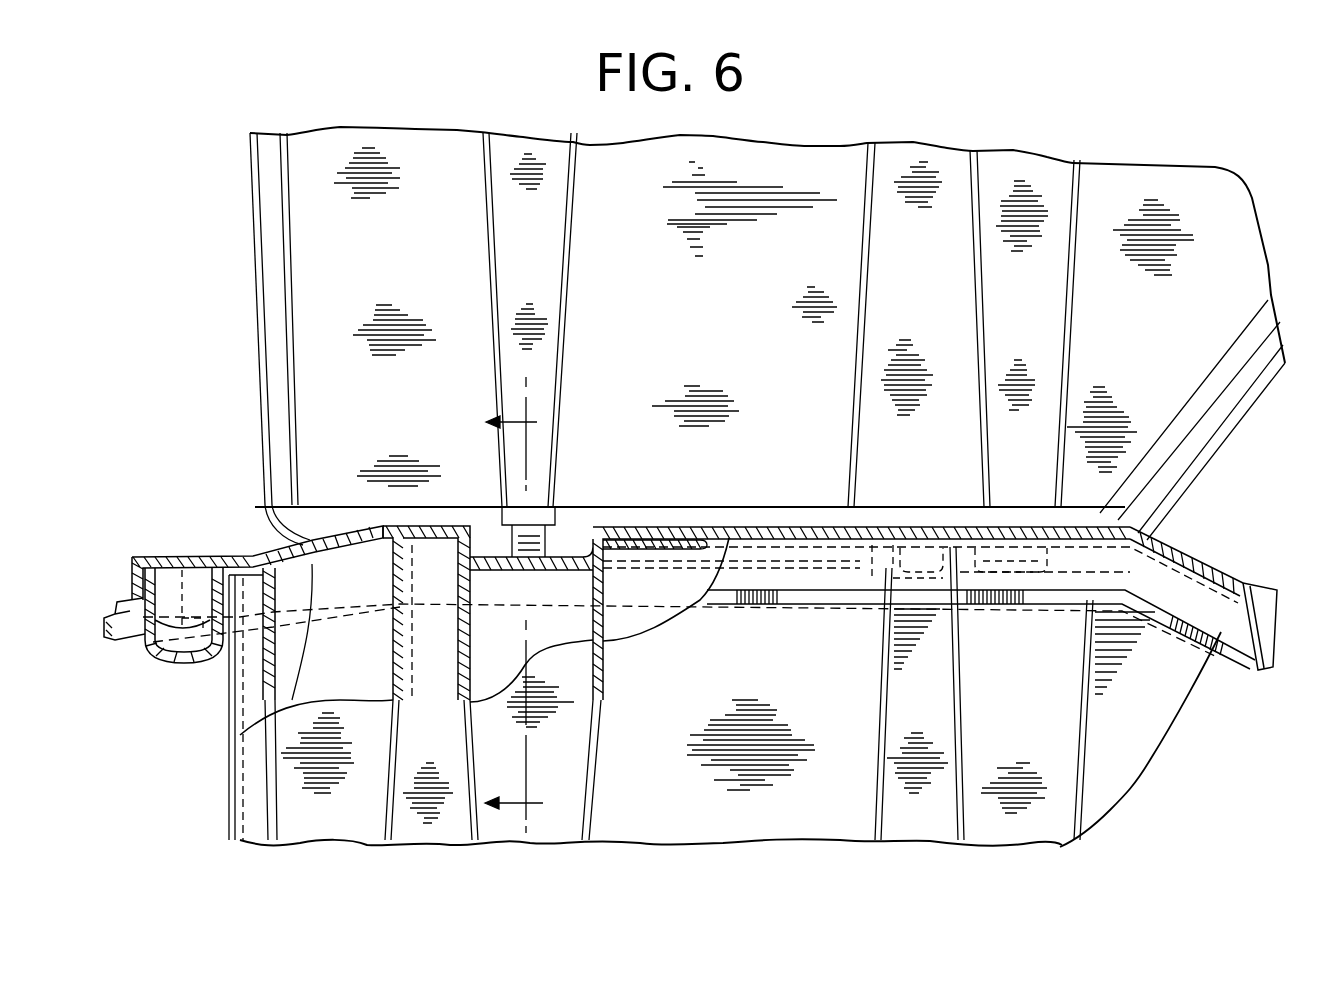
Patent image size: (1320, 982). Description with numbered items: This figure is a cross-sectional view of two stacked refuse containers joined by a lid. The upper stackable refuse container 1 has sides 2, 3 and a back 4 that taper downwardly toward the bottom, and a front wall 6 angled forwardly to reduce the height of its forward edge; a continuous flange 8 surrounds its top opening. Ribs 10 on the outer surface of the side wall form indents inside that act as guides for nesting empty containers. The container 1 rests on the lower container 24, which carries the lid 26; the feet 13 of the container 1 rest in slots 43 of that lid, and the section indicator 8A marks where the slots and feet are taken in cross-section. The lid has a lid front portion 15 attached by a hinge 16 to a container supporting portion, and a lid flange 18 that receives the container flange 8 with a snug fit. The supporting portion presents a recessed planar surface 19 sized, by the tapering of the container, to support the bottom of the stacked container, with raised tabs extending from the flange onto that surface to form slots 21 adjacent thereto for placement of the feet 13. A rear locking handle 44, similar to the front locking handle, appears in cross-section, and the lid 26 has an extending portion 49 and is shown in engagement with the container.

The stackable refuse container 1 is at (226, 240).
The side 2 is at (614, 634).
The side 3 is at (748, 332).
The back 4 is at (278, 334).
The front wall 6 is at (1227, 413).
The continuous flange 8 is at (1208, 600).
The section line 8A is at (533, 605).
The ribs 10 is at (548, 272).
The feet 13 is at (514, 562).
The lid front portion 15 is at (1230, 580).
The hinge 16 is at (1170, 553).
The lid flange 18 is at (765, 527).
The recessed planar surface 19 is at (688, 547).
The slots 21 is at (418, 598).
The container 24 is at (176, 794).
The lid 26 is at (280, 552).
The slots 43 is at (563, 557).
The rear locking handle 44 is at (110, 522).
The extending portion 49 is at (191, 556).